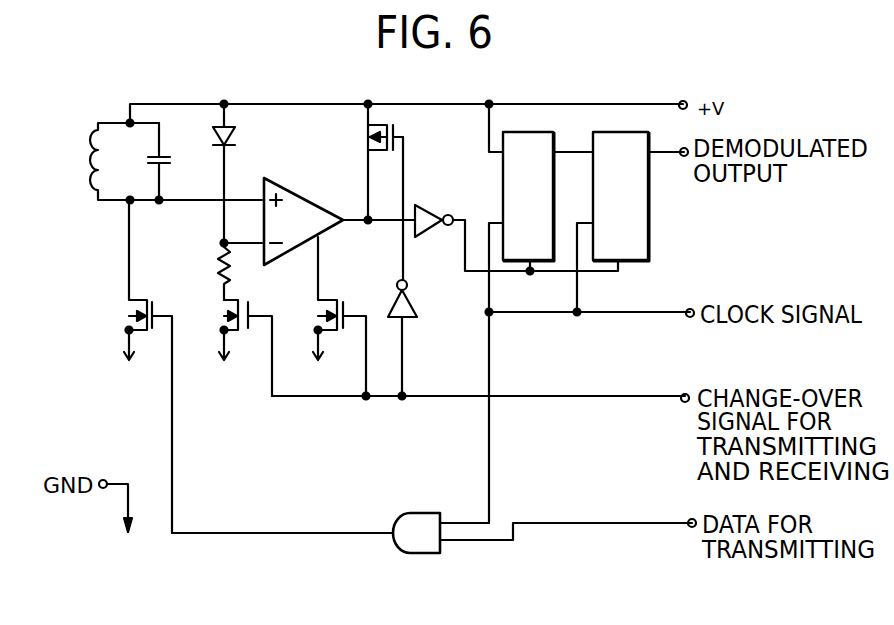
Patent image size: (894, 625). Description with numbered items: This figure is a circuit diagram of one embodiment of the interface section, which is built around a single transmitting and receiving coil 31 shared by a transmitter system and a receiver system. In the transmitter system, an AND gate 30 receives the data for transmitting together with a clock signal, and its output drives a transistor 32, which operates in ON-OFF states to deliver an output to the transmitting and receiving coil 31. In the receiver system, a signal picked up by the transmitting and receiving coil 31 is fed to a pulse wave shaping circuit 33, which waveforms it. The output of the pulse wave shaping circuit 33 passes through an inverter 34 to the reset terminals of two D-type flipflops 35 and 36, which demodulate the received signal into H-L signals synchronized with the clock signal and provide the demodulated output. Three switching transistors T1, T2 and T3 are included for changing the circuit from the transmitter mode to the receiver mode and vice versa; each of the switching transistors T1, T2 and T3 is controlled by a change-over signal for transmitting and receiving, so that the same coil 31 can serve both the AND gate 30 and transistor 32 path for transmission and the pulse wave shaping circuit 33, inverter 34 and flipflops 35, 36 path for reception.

The AND gate 30 is at (399, 514).
The transmitting and receiving coil 31 is at (88, 188).
The transistor 32 is at (136, 338).
The pulse wave shaping circuit 33 is at (313, 198).
The inverter 34 is at (432, 214).
The D-type flipflop 35 is at (528, 130).
The D-type flipflop 36 is at (618, 130).
The switching transistor T1 is at (245, 348).
The switching transistor T2 is at (339, 316).
The switching transistor T3 is at (385, 162).